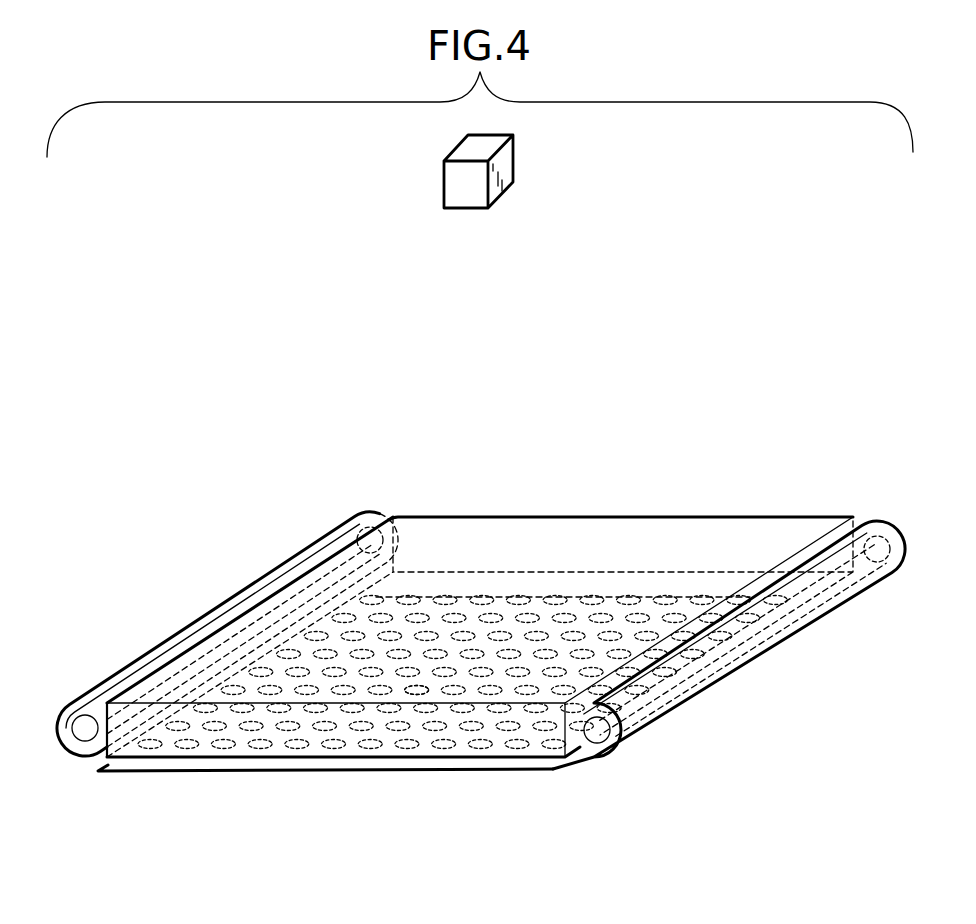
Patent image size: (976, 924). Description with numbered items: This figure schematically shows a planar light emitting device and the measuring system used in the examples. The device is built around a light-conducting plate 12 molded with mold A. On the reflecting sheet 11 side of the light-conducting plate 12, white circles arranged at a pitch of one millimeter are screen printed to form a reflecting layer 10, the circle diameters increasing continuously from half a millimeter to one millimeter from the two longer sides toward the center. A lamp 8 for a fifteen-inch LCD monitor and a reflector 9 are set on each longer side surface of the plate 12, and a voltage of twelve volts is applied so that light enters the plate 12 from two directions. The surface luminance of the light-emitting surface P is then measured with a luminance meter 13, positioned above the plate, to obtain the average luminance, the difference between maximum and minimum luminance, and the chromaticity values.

The lamp 8 is at (85, 735).
The reflector 9 is at (300, 550).
The reflecting layer 10 is at (536, 740).
The reflecting sheet 11 is at (300, 774).
The light-conducting plate 12 is at (453, 745).
The luminance meter 13 is at (490, 167).
The light-emitting surface P is at (404, 694).